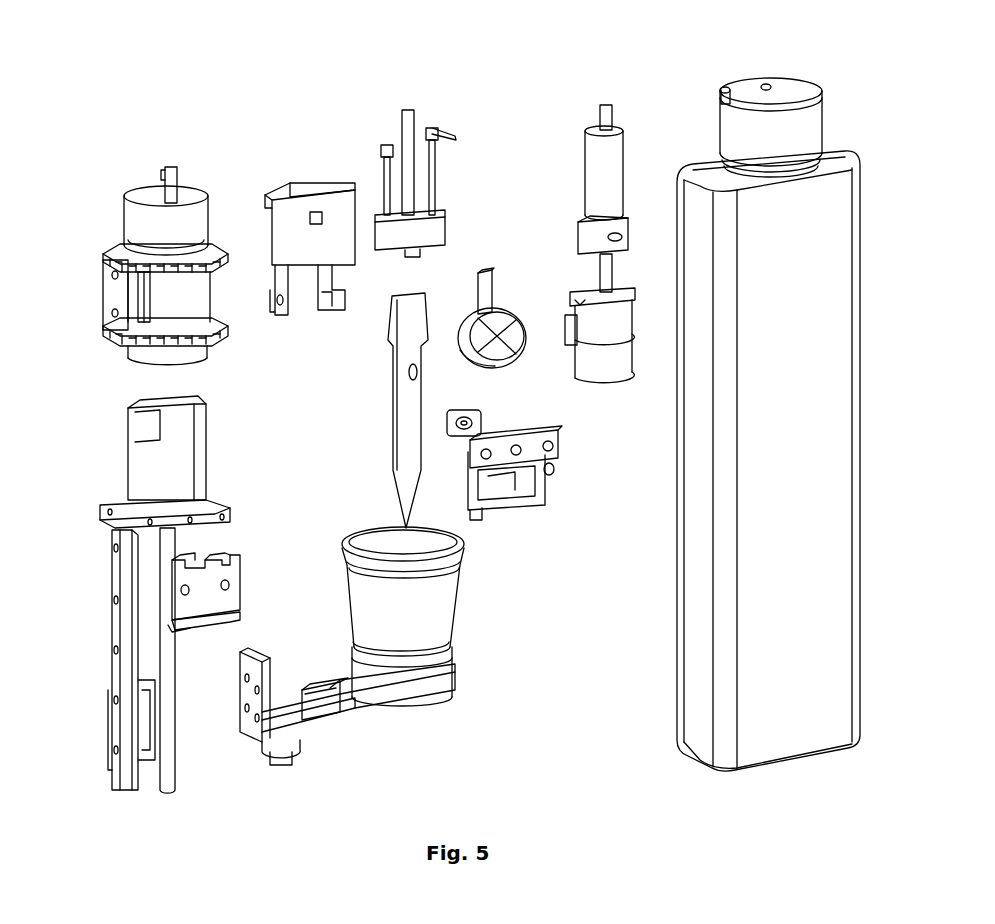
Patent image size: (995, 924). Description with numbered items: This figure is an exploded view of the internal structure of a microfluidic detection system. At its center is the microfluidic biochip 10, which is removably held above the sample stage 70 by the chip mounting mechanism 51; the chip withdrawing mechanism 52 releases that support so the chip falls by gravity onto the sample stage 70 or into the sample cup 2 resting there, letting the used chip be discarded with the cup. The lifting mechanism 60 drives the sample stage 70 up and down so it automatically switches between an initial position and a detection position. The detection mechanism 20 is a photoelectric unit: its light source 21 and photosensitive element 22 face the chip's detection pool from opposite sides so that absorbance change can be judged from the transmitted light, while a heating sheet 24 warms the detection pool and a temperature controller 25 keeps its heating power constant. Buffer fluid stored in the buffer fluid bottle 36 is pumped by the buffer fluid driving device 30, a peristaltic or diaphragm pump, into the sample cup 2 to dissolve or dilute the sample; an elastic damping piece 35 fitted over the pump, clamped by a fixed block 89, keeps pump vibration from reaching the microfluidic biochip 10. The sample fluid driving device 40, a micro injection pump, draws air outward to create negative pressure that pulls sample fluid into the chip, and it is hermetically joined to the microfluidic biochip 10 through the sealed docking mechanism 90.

The sample cup 2 is at (435, 604).
The microfluidic biochip 10 is at (410, 415).
The detection mechanism 20 is at (547, 466).
The light source 21 is at (520, 435).
The photosensitive element 22 is at (470, 412).
The heating sheet 24 is at (512, 482).
The temperature controller 25 is at (553, 470).
The buffer fluid driving device 30 is at (134, 190).
The elastic damping piece 35 is at (220, 295).
The buffer fluid bottle 36 is at (700, 668).
The sample fluid driving device 40 is at (638, 160).
The chip mounting mechanism 51 is at (303, 175).
The chip withdrawing mechanism 52 is at (491, 263).
The lifting mechanism 60 is at (100, 581).
The sample stage 70 is at (368, 745).
The fixed block 89 is at (115, 291).
The sealed docking mechanism 90 is at (450, 166).